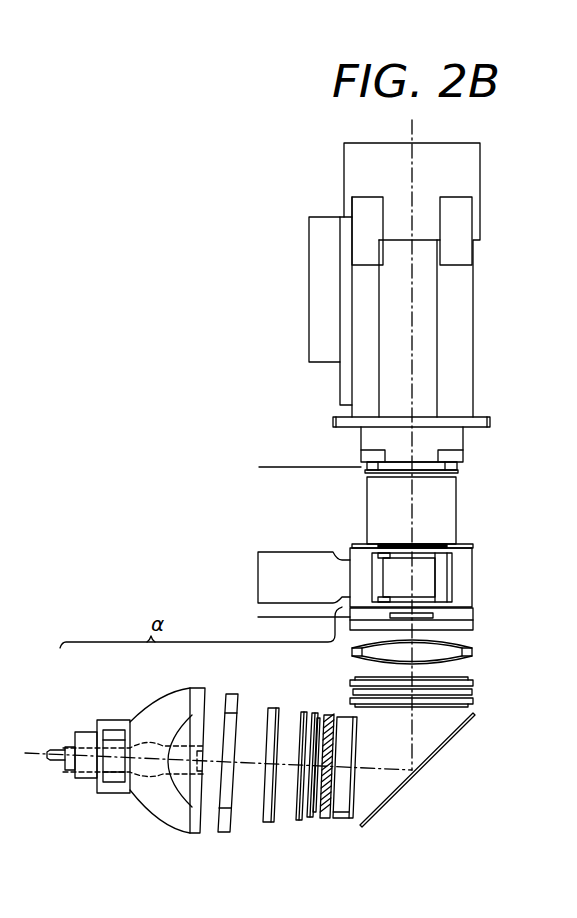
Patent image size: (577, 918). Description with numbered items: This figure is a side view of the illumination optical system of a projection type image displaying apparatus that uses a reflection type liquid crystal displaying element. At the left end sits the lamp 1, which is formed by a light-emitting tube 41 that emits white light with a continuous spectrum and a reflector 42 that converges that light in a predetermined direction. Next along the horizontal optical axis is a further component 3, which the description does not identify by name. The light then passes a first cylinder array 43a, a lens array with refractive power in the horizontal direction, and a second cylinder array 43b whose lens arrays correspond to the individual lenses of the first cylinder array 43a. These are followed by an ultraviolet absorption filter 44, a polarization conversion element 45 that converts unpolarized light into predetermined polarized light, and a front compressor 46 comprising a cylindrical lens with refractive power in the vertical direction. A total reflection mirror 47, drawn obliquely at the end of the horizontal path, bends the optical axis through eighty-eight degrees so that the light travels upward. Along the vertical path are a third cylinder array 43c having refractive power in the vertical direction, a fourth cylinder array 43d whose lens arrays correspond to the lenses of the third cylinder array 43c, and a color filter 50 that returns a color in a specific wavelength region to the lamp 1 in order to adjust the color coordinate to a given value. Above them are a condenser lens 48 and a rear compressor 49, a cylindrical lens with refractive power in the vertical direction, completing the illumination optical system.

The lamp 1 is at (126, 760).
The lens 3 is at (230, 693).
The light-emitting tube 41 is at (143, 738).
The reflector 42 is at (155, 808).
The first cylinder array 43a is at (270, 822).
The second cylinder array 43b is at (308, 818).
The third cylinder array 43c is at (473, 701).
The fourth cylinder array 43d is at (473, 683).
The ultraviolet absorption filter 44 is at (302, 713).
The polarization conversion element 45 is at (325, 715).
The front compressor 46 is at (345, 820).
The total reflection mirror 47 is at (395, 793).
The condenser lens 48 is at (473, 647).
The rear compressor 49 is at (473, 617).
The color filter 50 is at (472, 692).